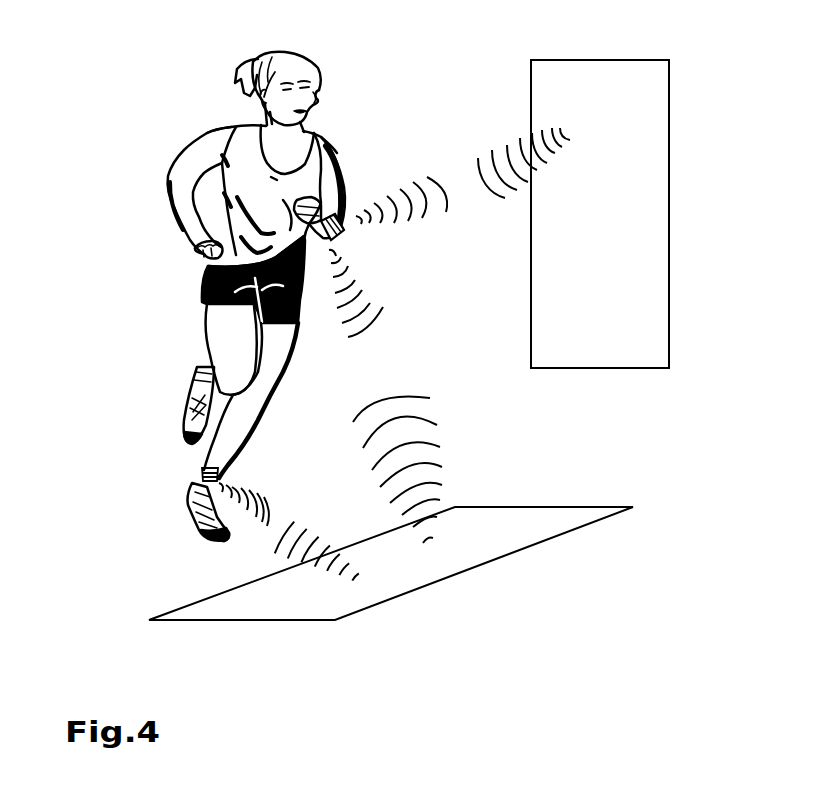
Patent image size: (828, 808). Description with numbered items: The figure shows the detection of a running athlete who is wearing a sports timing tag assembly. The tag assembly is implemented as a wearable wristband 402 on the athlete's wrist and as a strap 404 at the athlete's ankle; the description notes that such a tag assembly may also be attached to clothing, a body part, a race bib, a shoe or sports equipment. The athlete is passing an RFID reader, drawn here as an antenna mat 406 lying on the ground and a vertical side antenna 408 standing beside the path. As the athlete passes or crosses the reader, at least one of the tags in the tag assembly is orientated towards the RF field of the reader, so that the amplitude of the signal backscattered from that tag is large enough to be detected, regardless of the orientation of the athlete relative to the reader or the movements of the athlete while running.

The wearable wristband 402 is at (341, 217).
The ankle-worn wearable sensor device 404 is at (207, 479).
The antenna mat 406 is at (557, 517).
The vertical side antenna 408 is at (600, 214).